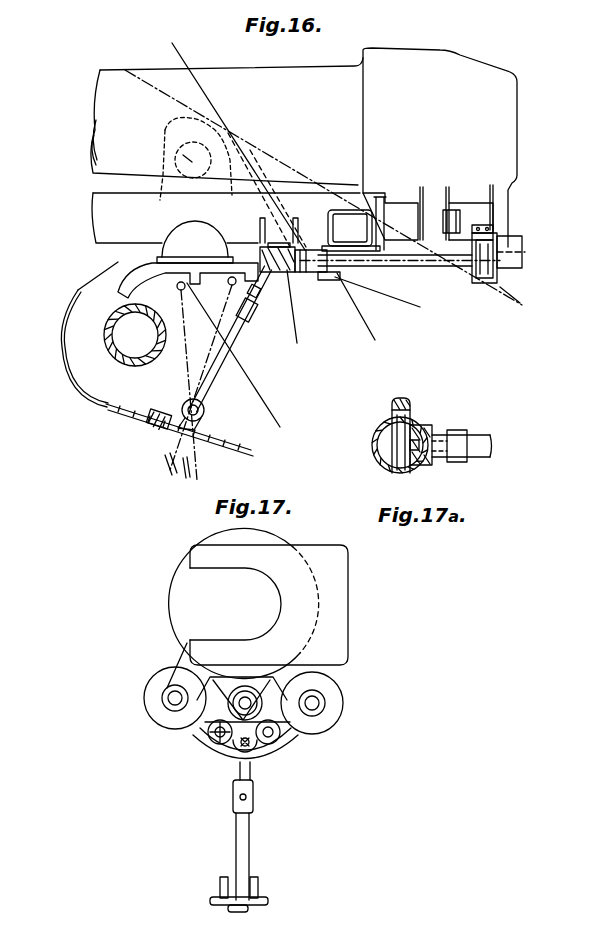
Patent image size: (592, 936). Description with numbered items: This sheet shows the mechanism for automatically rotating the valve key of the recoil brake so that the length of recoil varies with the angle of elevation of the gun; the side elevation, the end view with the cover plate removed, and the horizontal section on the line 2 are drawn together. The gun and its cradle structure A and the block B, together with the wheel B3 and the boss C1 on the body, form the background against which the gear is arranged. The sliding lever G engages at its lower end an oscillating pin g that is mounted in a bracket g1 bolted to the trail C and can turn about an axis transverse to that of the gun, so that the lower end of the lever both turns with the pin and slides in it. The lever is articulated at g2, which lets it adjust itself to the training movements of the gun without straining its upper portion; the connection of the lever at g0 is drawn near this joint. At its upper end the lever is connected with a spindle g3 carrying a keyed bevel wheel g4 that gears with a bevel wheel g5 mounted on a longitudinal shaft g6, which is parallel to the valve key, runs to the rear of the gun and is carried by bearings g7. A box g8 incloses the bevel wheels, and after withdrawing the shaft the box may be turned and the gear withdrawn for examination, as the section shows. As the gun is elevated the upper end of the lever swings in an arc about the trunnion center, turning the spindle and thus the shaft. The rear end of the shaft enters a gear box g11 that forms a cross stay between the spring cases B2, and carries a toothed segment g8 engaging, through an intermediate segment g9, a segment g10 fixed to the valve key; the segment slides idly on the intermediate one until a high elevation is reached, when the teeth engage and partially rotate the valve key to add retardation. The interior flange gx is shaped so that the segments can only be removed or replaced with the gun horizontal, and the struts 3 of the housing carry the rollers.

In FIG. 16, the machine frame body A is at (304, 147).
In FIG. 17, the machine frame body A is at (257, 608).
In FIG. 16, the bearing block B is at (354, 224).
In FIG. 17, the spring cases B2 is at (340, 682).
In FIG. 16, the wheel B3 is at (135, 335).
In FIG. 16, the trail C is at (157, 373).
In FIG. 16, the pivot boss C1 is at (178, 155).
In FIG. 16, the sliding lever G is at (218, 366).
In FIG. 17A, the sliding lever G is at (400, 412).
In FIG. 17, the sliding lever G is at (252, 840).
In FIG. 16, the oscillating pin g is at (204, 410).
In FIG. 17, the oscillating pin g is at (222, 897).
In FIG. 16, the bracket g1 is at (160, 425).
In FIG. 17, the bracket g1 is at (222, 884).
In FIG. 16, the articulation g2 is at (255, 318).
In FIG. 17, the articulation g2 is at (254, 796).
In FIG. 16, the spindle g3 is at (290, 264).
In FIG. 17A, the spindle g3 is at (398, 440).
In FIG. 16, the bevel wheel g4 is at (262, 243).
In FIG. 17A, the bevel wheel g4 is at (418, 466).
In FIG. 16, the bevel wheel g5 is at (300, 242).
In FIG. 17A, the bevel wheel g5 is at (430, 426).
In FIG. 16, the longitudinal shaft g6 is at (412, 260).
In FIG. 17A, the longitudinal shaft g6 is at (478, 437).
In FIG. 16, the bearings g7 is at (330, 280).
In FIG. 17A, the bearings g7 is at (445, 460).
In FIG. 17A, the box / toothed segment g8 is at (372, 446).
In FIG. 17, the box / toothed segment g8 is at (228, 748).
In FIG. 17, the intermediate segment g9 is at (262, 748).
In FIG. 17, the segment g10 is at (282, 735).
In FIG. 17, the gear box g11 is at (207, 742).
In FIG. 16, the rod connection g0 is at (270, 300).
In FIG. 17, the interior flange gx is at (247, 700).
In FIG. 16, the section line 2— 2 is at (262, 256).
In FIG. 17, the housing strut 3 is at (247, 717).